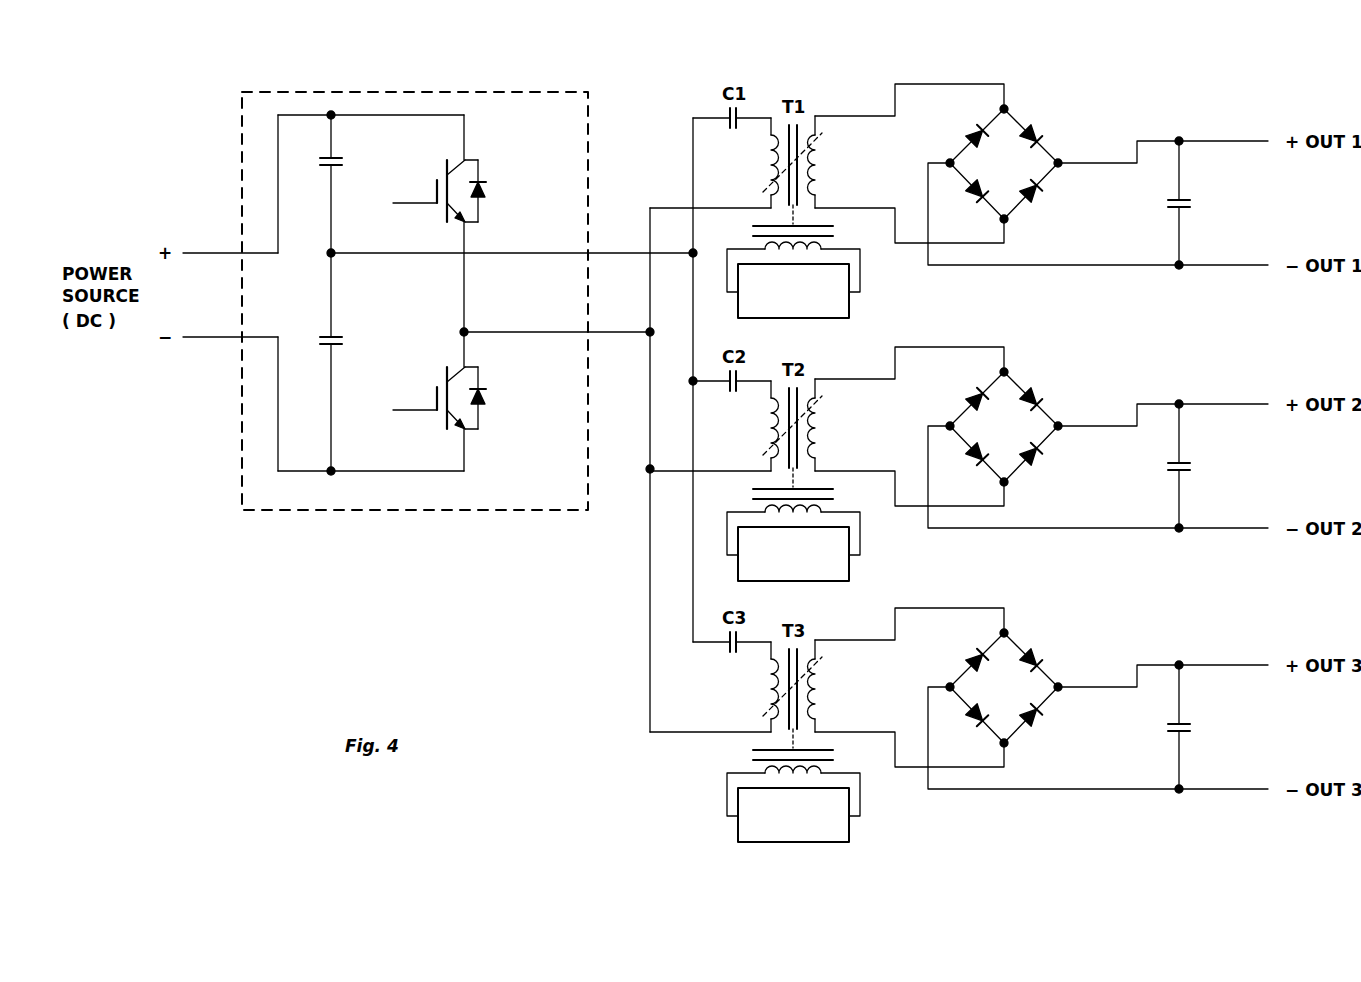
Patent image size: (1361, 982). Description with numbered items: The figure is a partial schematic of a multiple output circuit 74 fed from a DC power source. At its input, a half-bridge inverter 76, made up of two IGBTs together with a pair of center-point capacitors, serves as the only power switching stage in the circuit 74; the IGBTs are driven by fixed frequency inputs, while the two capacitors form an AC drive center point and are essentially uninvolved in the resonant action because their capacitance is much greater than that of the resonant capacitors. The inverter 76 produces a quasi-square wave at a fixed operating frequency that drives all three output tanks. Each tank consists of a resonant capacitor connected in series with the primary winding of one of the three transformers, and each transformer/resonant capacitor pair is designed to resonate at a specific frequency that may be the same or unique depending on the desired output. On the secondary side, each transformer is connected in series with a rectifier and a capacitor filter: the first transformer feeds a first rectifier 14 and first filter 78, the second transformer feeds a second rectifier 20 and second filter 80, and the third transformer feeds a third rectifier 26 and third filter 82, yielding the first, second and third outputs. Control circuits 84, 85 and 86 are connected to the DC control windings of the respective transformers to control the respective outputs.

The half-bridge inverter 76 is at (487, 92).
The circuit 74 is at (946, 62).
The first rectifier 14 is at (1017, 117).
The second rectifier 20 is at (1017, 408).
The third rectifier 26 is at (1017, 666).
The first filter 78 is at (1184, 190).
The second filter 80 is at (1204, 466).
The third filter 82 is at (1204, 727).
The control circuit 84 is at (849, 311).
The control circuit 85 is at (827, 535).
The control circuit 86 is at (827, 805).